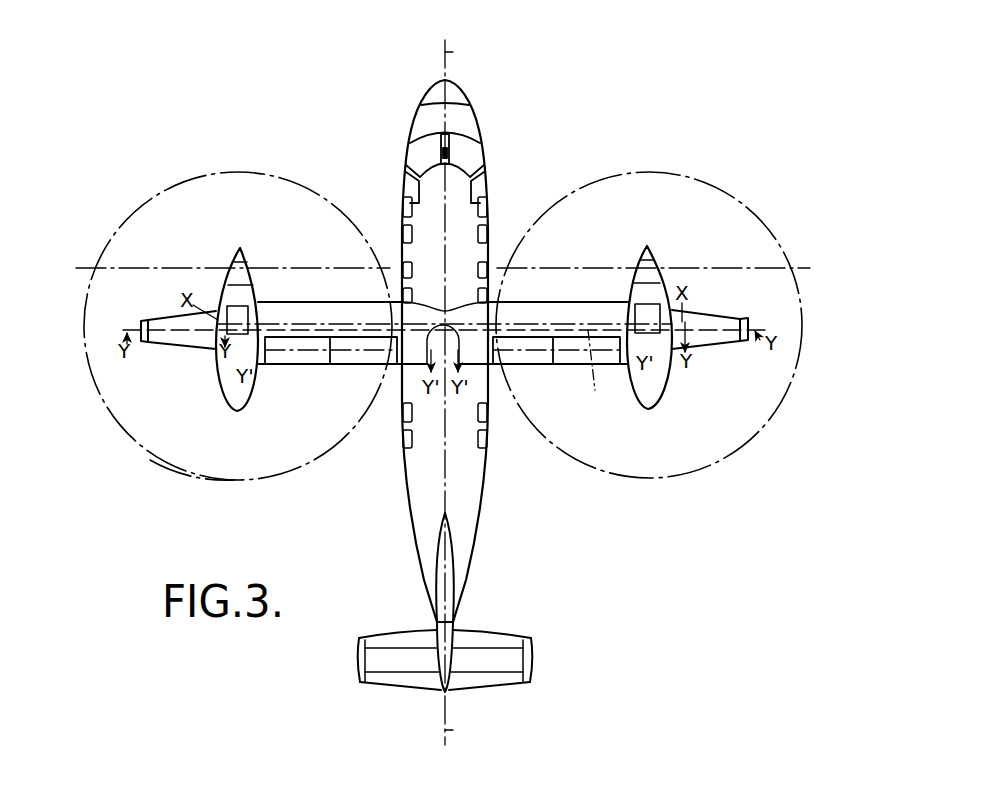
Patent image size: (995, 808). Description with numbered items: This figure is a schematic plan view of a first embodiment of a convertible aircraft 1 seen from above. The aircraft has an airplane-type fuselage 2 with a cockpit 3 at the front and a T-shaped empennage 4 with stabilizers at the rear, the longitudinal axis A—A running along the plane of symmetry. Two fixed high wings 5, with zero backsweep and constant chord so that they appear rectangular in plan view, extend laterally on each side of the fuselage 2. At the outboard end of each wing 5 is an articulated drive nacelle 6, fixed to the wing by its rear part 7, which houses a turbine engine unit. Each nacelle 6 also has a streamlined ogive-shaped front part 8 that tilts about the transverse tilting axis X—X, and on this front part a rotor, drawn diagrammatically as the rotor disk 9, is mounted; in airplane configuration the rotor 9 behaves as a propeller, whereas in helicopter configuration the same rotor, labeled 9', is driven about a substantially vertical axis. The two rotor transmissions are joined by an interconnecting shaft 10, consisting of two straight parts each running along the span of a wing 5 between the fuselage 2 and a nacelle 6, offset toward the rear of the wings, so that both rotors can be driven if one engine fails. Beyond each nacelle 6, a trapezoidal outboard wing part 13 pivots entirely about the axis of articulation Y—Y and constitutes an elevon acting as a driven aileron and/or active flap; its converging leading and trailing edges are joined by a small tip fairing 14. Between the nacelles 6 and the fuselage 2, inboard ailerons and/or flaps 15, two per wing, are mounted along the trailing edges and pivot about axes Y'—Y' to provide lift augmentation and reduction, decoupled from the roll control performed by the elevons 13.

The convertible aircraft 1 is at (390, 452).
The fuselage 2 is at (470, 467).
The cockpit 3 is at (458, 123).
The T-shaped empennage 4 is at (487, 658).
The fixed high wing 5 is at (300, 312).
The articulated drive nacelle 6 is at (212, 360).
The rear part of nacelle 7 is at (237, 397).
The front part of nacelle 8 is at (237, 262).
The rotor disk 9 is at (446, 326).
The rotor in helicopter configuration 9' is at (476, 443).
The interconnecting shaft 10 is at (604, 376).
The outboard wing part 13 is at (173, 343).
The tip fairing 14 is at (142, 327).
The inboard aileron and/or flap 15 is at (310, 360).